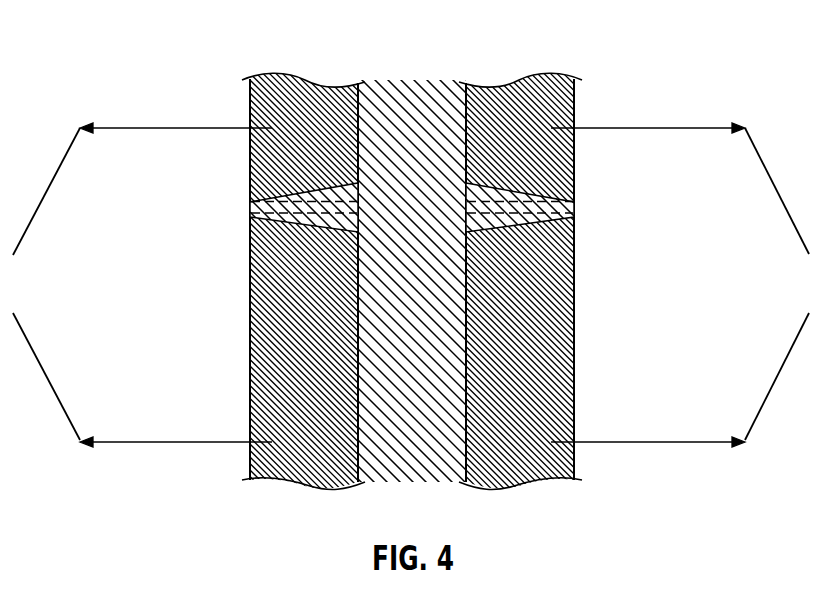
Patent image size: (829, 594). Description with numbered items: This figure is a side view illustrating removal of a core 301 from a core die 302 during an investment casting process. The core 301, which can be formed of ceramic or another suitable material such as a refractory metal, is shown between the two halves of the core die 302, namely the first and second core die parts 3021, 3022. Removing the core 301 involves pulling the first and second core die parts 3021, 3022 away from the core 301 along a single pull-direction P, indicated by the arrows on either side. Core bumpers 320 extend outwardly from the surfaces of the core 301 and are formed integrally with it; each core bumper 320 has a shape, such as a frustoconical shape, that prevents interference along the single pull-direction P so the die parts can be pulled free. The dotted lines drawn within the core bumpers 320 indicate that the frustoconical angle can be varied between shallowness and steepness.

The core 301 is at (413, 90).
The core die 302 is at (412, 297).
The first core die part 3021 is at (280, 350).
The second core die part 3022 is at (548, 351).
The core bumper 320 is at (307, 229).
The single pull-direction P is at (414, 285).